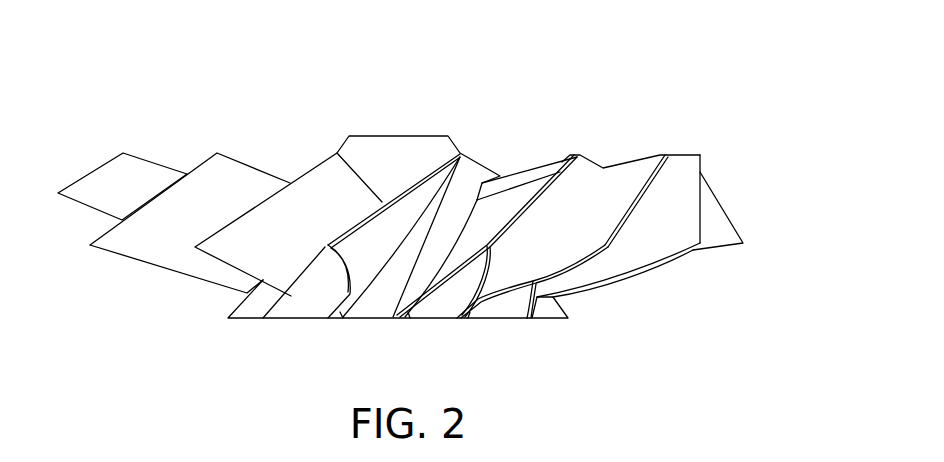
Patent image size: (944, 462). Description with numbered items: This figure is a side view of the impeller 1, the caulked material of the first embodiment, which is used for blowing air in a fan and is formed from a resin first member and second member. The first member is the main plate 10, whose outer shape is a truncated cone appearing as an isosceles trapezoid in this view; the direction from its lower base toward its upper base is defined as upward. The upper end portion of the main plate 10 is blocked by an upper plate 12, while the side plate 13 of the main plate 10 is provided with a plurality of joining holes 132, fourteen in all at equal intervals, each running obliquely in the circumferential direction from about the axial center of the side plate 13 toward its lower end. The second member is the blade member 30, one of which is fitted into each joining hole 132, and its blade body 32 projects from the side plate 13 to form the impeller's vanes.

The impeller 1 is at (451, 205).
The main plate 10 is at (379, 220).
The upper plate 12 is at (428, 137).
The side plate 13 is at (465, 241).
The joining hole 132 is at (468, 318).
The blade member 30 is at (691, 244).
The blade body 32 is at (653, 237).